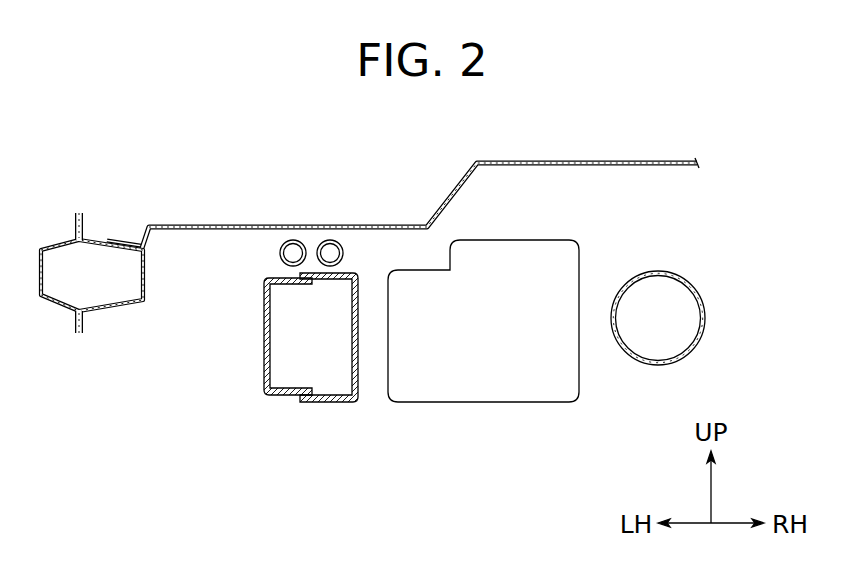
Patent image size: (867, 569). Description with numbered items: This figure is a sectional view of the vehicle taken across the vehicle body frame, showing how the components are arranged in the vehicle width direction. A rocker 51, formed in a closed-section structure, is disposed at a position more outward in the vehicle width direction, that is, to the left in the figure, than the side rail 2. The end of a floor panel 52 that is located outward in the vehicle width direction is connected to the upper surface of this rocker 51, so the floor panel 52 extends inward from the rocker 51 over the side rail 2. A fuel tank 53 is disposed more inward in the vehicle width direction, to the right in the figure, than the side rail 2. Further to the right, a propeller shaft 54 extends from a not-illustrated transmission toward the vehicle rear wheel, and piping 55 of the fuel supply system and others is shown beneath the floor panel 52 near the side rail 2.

The side rail 2 is at (315, 403).
The rocker 51 is at (111, 309).
The floor panel 52 is at (184, 223).
The fuel tank 53 is at (483, 392).
The propeller shaft 54 is at (673, 272).
The piping 55 is at (293, 239).